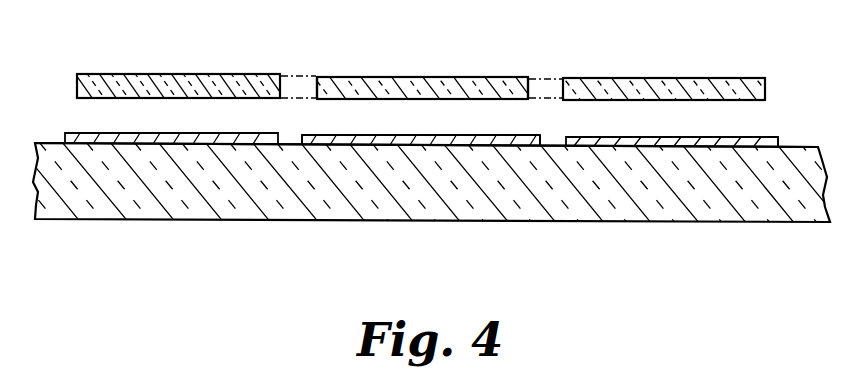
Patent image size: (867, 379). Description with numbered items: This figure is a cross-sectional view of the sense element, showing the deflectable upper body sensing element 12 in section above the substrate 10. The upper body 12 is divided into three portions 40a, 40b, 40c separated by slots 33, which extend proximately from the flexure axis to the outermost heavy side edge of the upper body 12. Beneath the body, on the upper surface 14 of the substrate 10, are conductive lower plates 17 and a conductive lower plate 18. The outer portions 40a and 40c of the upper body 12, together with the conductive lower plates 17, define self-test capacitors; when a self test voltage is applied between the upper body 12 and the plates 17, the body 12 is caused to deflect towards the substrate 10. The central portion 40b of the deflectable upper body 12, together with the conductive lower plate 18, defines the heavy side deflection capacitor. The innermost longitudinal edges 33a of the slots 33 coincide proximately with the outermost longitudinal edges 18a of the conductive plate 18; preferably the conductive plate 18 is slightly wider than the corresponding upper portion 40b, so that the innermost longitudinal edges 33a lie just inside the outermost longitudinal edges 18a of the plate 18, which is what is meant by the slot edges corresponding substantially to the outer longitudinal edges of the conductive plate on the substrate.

The substrate 10 is at (772, 208).
The deflectable upper body sensing element 12 is at (432, 54).
The upper surface of substrate 14 is at (797, 144).
The conductive lower plates 17 is at (50, 88).
The conductive lower plate 18 is at (517, 132).
The outermost longitudinal edges of conductive plate 18a is at (293, 137).
The slots 33 is at (296, 86).
The innermost longitudinal edges of slots 33a is at (320, 80).
The portion of upper body 40a is at (189, 73).
The portion of deflectable upper body 40b is at (403, 77).
The portion of upper body 40c is at (663, 78).